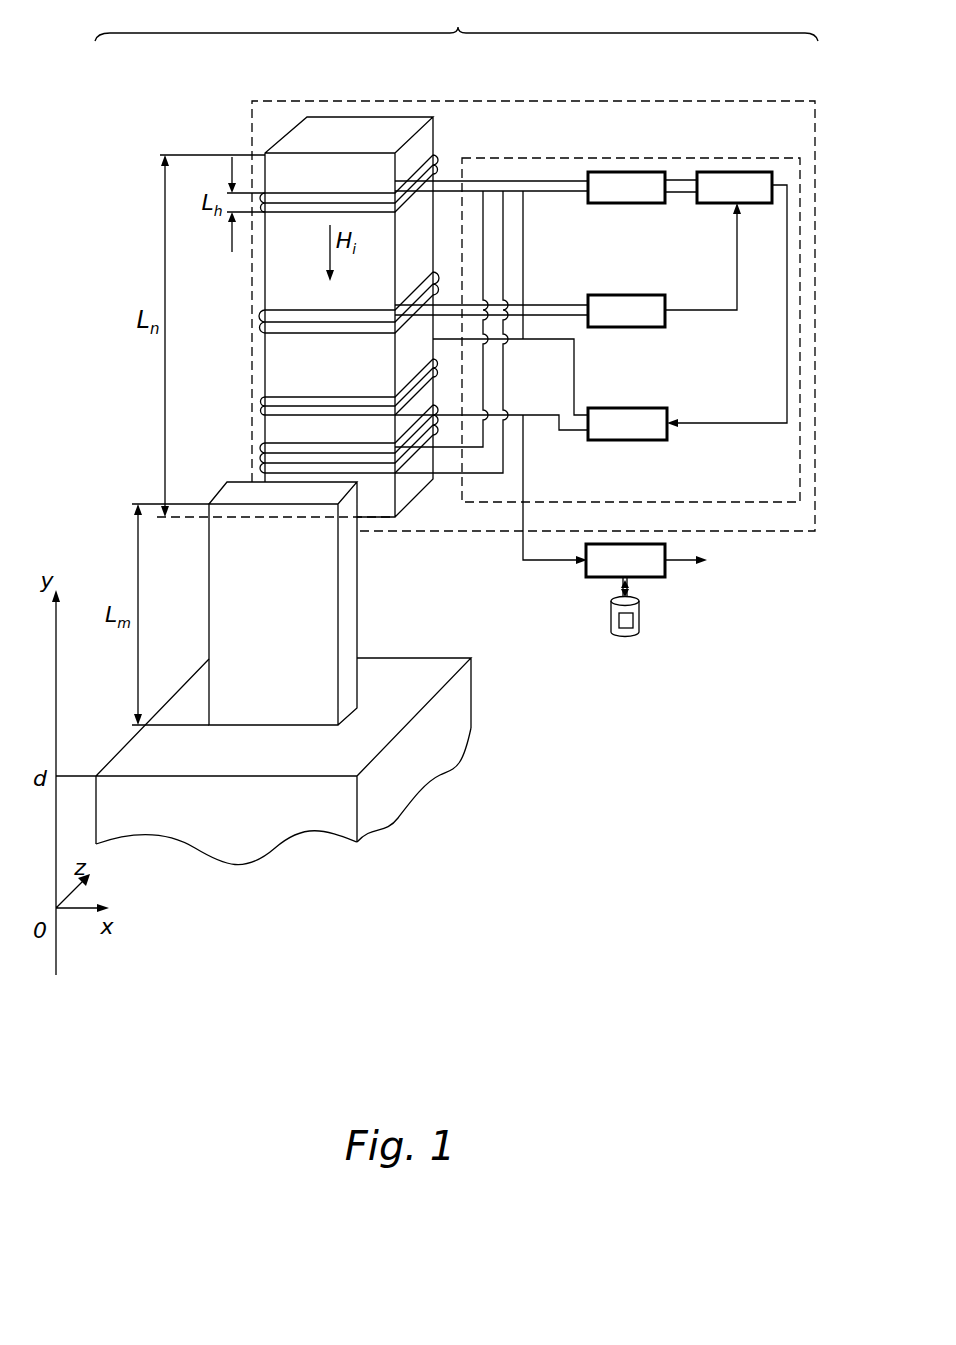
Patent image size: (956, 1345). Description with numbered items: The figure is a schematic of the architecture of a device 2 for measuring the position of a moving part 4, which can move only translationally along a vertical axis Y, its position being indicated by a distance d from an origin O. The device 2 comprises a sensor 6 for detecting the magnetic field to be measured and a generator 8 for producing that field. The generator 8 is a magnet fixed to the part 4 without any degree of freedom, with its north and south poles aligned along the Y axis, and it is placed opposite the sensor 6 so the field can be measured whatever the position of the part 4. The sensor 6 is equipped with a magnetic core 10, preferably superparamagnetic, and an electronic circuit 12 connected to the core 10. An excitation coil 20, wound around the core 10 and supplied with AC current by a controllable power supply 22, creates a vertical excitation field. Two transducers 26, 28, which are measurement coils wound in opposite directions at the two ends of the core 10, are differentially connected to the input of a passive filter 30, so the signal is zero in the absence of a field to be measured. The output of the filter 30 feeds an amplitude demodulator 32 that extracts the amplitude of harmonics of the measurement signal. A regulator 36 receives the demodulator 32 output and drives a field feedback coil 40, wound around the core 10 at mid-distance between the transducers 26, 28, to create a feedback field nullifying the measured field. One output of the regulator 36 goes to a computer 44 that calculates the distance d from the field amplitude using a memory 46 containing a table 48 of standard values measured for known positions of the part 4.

The device for measuring the position of a moving part 2 is at (456, 20).
The moving part 4 is at (409, 677).
The sensor 6 is at (545, 97).
The generator 8 is at (283, 603).
The magnetic core 10 is at (358, 130).
The electronic circuit 12 is at (640, 152).
The excitation coil 20 is at (330, 318).
The controllable power supply 22 is at (626, 311).
The transducer 26 is at (330, 195).
The transducer 28 is at (330, 468).
The passive filter 30 is at (626, 187).
The amplitude demodulator 32 is at (734, 187).
The regulator 36 is at (627, 424).
The field feedback coil 40 is at (330, 405).
The computer 44 is at (625, 560).
The memory 46 is at (642, 598).
The table of standard values 48 is at (633, 625).